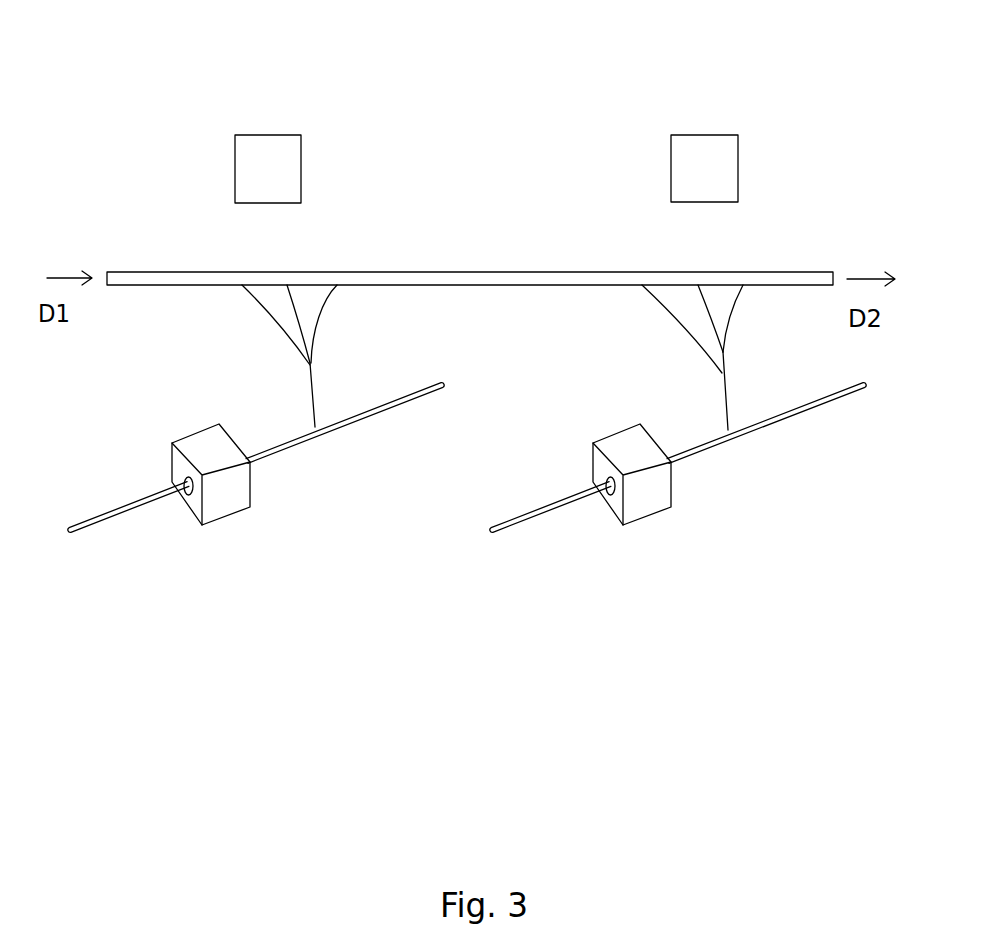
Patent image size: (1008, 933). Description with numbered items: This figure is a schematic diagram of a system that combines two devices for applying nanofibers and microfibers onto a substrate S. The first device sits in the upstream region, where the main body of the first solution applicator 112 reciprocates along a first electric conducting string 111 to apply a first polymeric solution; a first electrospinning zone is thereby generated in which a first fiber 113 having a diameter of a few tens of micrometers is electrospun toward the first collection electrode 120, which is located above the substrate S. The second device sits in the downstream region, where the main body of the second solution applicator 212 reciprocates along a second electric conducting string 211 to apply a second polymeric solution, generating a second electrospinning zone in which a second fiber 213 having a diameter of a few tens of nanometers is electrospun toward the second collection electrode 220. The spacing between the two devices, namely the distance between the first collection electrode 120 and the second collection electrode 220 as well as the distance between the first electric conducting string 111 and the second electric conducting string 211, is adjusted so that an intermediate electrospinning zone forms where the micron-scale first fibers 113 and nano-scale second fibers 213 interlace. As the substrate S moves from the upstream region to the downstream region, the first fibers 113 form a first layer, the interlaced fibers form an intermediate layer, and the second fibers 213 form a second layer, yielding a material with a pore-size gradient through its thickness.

The substrate S is at (807, 280).
The first collection electrode 120 is at (267, 152).
The second collection electrode 220 is at (700, 145).
The first electric conducting string 111 is at (130, 512).
The first solution applicator 112 is at (223, 497).
The first fiber 113 is at (298, 380).
The second electric conducting string 211 is at (552, 510).
The second solution applicator 212 is at (647, 492).
The second fiber 213 is at (713, 383).